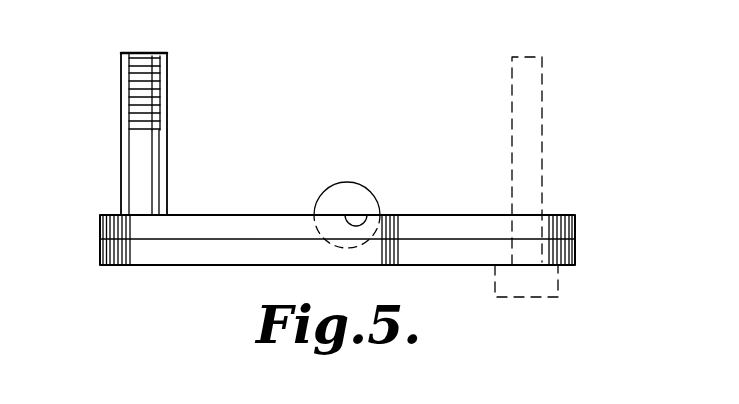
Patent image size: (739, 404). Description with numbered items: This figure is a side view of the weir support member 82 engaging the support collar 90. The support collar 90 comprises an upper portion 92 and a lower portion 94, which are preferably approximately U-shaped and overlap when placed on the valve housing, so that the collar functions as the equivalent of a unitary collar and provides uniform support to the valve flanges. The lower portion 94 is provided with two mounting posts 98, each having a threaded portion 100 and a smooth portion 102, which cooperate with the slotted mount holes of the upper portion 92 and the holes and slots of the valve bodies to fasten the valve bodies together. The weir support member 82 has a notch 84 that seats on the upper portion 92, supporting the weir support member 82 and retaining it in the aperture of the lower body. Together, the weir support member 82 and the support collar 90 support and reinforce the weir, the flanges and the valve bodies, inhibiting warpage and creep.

The weir support member 82 is at (364, 188).
The notch 84 is at (378, 215).
The support collar 90 is at (97, 240).
The upper portion 92 is at (576, 232).
The lower portion 94 is at (99, 264).
The mounting posts 98 is at (116, 109).
The threaded portion 100 is at (167, 70).
The smooth portion 102 is at (150, 166).